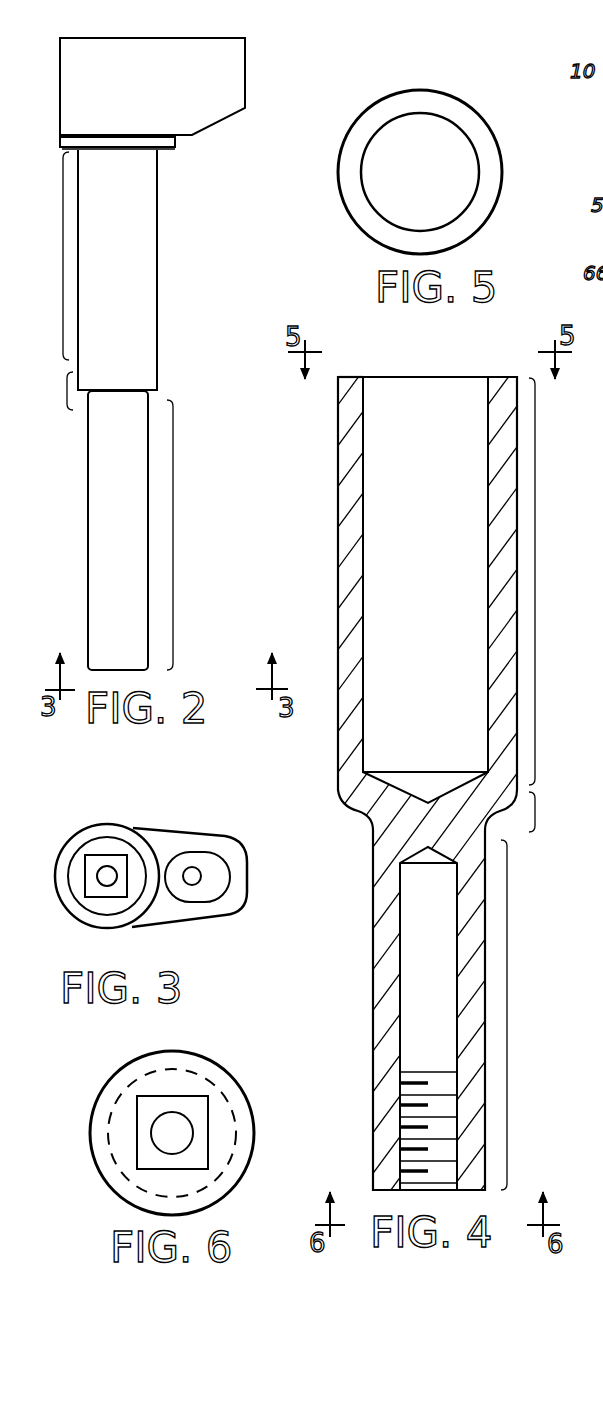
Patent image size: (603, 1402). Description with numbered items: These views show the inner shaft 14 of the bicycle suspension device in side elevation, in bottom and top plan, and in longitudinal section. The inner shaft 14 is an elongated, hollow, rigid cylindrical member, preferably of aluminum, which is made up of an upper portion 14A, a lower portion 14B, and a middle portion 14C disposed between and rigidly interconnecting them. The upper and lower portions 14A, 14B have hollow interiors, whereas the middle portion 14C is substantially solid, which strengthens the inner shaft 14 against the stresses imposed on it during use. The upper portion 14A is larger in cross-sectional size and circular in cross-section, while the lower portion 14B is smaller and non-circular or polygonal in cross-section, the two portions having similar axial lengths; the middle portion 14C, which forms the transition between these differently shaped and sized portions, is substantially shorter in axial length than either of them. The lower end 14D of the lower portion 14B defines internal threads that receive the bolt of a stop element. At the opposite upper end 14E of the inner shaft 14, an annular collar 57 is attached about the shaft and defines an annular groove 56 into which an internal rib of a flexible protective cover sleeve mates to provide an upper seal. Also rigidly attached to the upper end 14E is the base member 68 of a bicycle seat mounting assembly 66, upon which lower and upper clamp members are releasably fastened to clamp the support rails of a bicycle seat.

In FIG. 2, the inner shaft 14 is at (182, 262).
In FIG. 3, the inner shaft 14 is at (97, 867).
In FIG. 6, the inner shaft 14 is at (222, 1060).
In FIG. 5, the inner shaft 14 is at (468, 98).
In FIG. 4, the inner shaft 14 is at (332, 474).
In FIG. 2, the upper portion 14A is at (63, 272).
In FIG. 3, the upper portion 14A is at (70, 858).
In FIG. 6, the upper portion 14A is at (255, 1114).
In FIG. 5, the upper portion 14A is at (360, 233).
In FIG. 4, the upper portion 14A is at (536, 568).
In FIG. 2, the lower portion 14B is at (173, 540).
In FIG. 3, the lower portion 14B is at (107, 897).
In FIG. 6, the lower portion 14B is at (210, 1138).
In FIG. 4, the lower portion 14B is at (508, 997).
In FIG. 2, the middle portion 14C is at (67, 391).
In FIG. 4, the middle portion 14C is at (536, 812).
In FIG. 4, the lower end 14D is at (378, 1183).
In FIG. 4, the upper end 14E is at (348, 378).
In FIG. 2, the annular groove 56 is at (175, 142).
In FIG. 2, the annular collar 57 is at (165, 150).
In FIG. 3, the annular collar 57 is at (65, 912).
In FIG. 2, the bicycle seat mounting assembly 66 is at (258, 41).
In FIG. 3, the bicycle seat mounting assembly 66 is at (187, 824).
In FIG. 2, the base member 68 is at (238, 95).